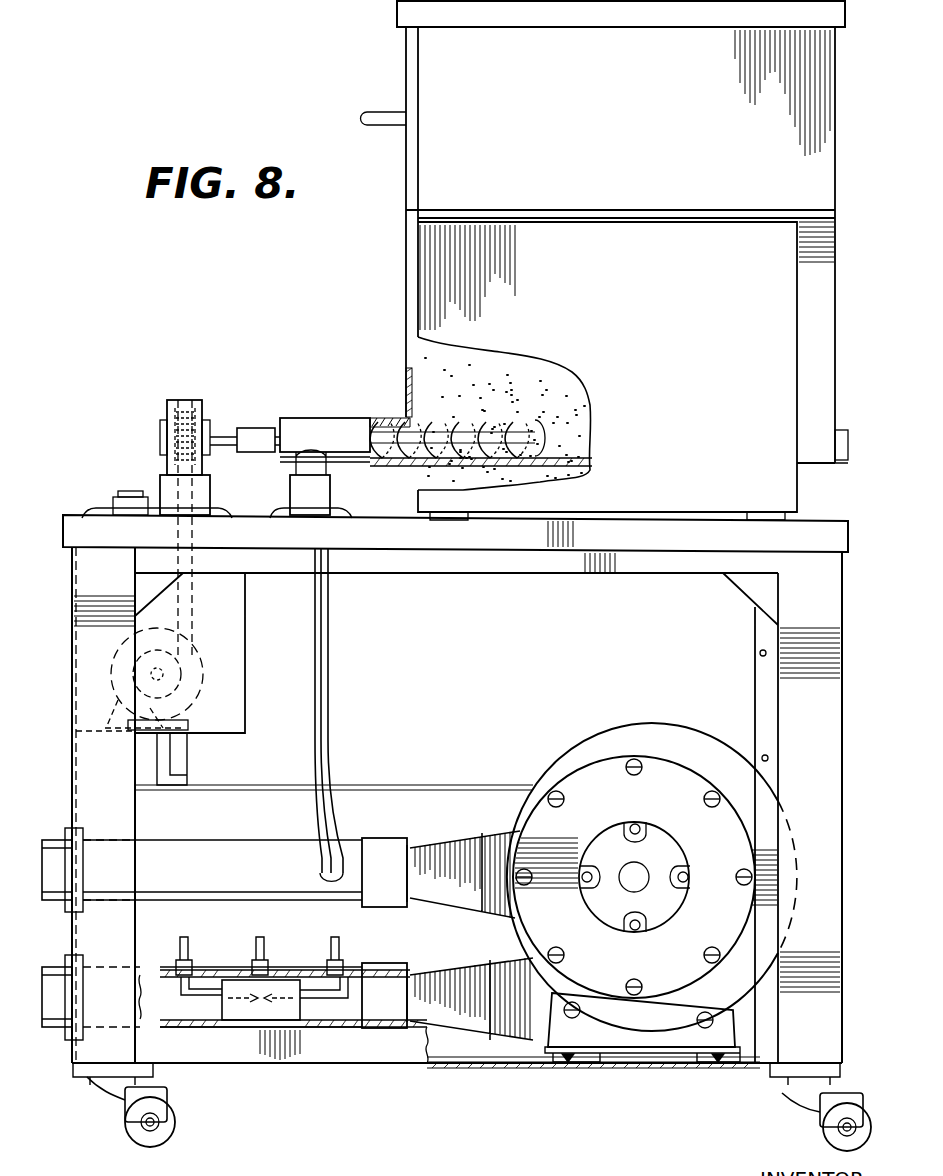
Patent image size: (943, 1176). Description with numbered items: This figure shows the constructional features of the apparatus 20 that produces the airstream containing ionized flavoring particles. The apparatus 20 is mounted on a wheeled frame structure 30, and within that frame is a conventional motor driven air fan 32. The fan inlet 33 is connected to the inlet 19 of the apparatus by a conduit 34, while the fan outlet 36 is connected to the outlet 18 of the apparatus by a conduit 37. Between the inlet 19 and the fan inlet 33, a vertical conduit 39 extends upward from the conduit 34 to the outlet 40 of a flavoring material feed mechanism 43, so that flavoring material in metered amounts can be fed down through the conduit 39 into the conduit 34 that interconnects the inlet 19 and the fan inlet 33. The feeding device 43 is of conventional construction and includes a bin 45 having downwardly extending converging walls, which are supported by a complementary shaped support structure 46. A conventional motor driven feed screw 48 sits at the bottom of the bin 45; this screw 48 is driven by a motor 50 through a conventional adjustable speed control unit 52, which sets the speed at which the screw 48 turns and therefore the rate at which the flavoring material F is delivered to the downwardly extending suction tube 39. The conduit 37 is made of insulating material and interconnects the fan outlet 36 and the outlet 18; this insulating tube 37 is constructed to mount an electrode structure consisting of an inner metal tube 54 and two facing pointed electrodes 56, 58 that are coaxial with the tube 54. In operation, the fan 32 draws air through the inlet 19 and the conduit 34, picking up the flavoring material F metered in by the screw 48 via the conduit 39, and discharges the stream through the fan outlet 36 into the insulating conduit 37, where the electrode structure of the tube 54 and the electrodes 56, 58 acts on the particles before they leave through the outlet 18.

The outlet 18 is at (58, 1030).
The inlet 19 is at (52, 840).
The apparatus 20 is at (390, 304).
The wheeled frame structure 30 is at (68, 648).
The motor driven air fan 32 is at (695, 740).
The fan inlet 33 is at (484, 836).
The conduit 34 is at (242, 856).
The fan outlet 36 is at (490, 966).
The conduit 37 is at (152, 968).
The conduit 39 is at (330, 713).
The outlet 40 is at (350, 408).
The flavoring material feed mechanism 43 is at (390, 402).
The bin 45 is at (407, 372).
The support structure 46 is at (790, 493).
The feed screw 48 is at (426, 463).
The motor 50 is at (114, 678).
The adjustable speed control unit 52 is at (166, 456).
The inner metal tube 54 is at (300, 1034).
The pointed electrode 56 is at (212, 1000).
The pointed electrode 58 is at (337, 1002).
The flavoring material F is at (470, 386).